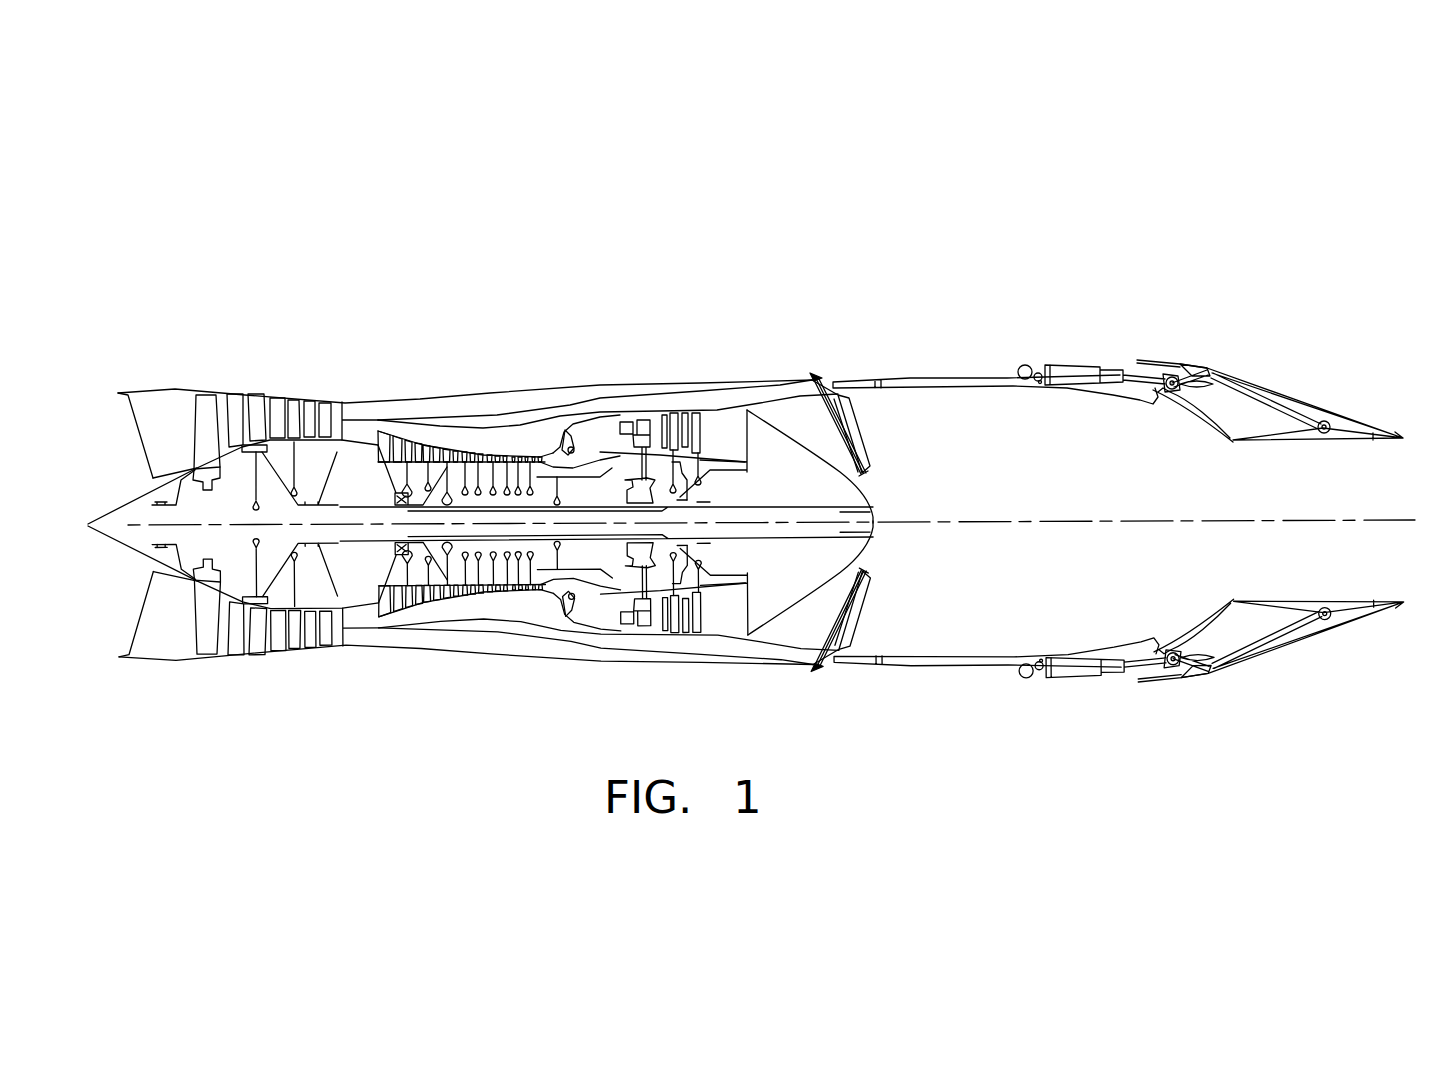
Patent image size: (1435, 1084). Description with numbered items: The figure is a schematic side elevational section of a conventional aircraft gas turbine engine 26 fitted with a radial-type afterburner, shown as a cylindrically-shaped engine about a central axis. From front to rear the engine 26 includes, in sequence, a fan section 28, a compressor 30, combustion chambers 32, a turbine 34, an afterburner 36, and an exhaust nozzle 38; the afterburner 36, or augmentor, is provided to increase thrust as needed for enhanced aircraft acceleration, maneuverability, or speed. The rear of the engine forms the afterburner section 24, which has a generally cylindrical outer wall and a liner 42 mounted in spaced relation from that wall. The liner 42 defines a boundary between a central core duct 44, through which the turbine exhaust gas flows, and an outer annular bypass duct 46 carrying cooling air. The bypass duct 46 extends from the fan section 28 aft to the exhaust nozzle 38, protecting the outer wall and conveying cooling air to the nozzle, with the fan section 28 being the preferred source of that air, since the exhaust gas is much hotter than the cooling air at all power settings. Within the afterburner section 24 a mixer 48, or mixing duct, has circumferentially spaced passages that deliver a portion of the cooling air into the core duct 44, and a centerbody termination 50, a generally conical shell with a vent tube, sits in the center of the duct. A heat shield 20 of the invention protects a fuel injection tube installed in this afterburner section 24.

The heat shield 20 is at (813, 431).
The afterburner section 24 is at (835, 352).
The aircraft gas turbine engine 26 is at (407, 272).
The fan section 28 is at (255, 365).
The compressor 30 is at (429, 420).
The combustion chambers 32 is at (580, 425).
The turbine 34 is at (660, 395).
The afterburner 36 is at (893, 485).
The exhaust nozzle 38 is at (1262, 377).
The liner 42 is at (991, 405).
The core duct 44 is at (795, 453).
The bypass duct 46 is at (778, 388).
The mixer 48 is at (860, 428).
The centerbody termination 50 is at (873, 530).